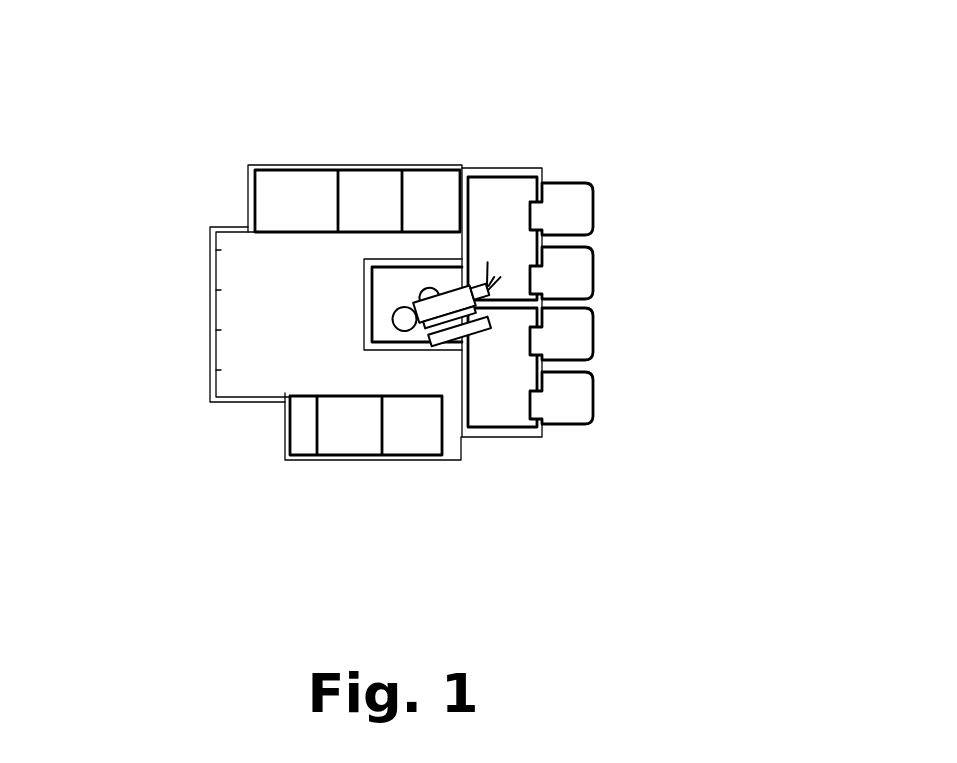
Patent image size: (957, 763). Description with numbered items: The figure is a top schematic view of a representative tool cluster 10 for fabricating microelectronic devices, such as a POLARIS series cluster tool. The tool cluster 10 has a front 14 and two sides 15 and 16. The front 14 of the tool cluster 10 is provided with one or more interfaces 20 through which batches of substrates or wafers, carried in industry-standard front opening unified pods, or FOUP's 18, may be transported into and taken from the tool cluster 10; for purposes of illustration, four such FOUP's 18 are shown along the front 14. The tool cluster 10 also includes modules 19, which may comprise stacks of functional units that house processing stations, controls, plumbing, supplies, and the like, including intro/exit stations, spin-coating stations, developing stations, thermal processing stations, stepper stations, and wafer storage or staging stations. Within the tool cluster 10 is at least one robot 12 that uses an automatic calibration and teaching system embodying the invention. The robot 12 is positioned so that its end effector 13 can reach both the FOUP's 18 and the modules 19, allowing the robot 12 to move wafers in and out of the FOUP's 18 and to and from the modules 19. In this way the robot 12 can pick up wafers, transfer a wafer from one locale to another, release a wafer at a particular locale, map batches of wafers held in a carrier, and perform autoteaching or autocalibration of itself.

The tool cluster 10 is at (222, 442).
The robot 12 is at (378, 304).
The end effector 13 is at (473, 265).
The front 14 is at (743, 345).
The side 15 is at (325, 530).
The side 16 is at (290, 99).
The front opening unified pods (FOUP's) 18 is at (593, 203).
The modules 19 is at (428, 187).
The interfaces 20 is at (530, 273).